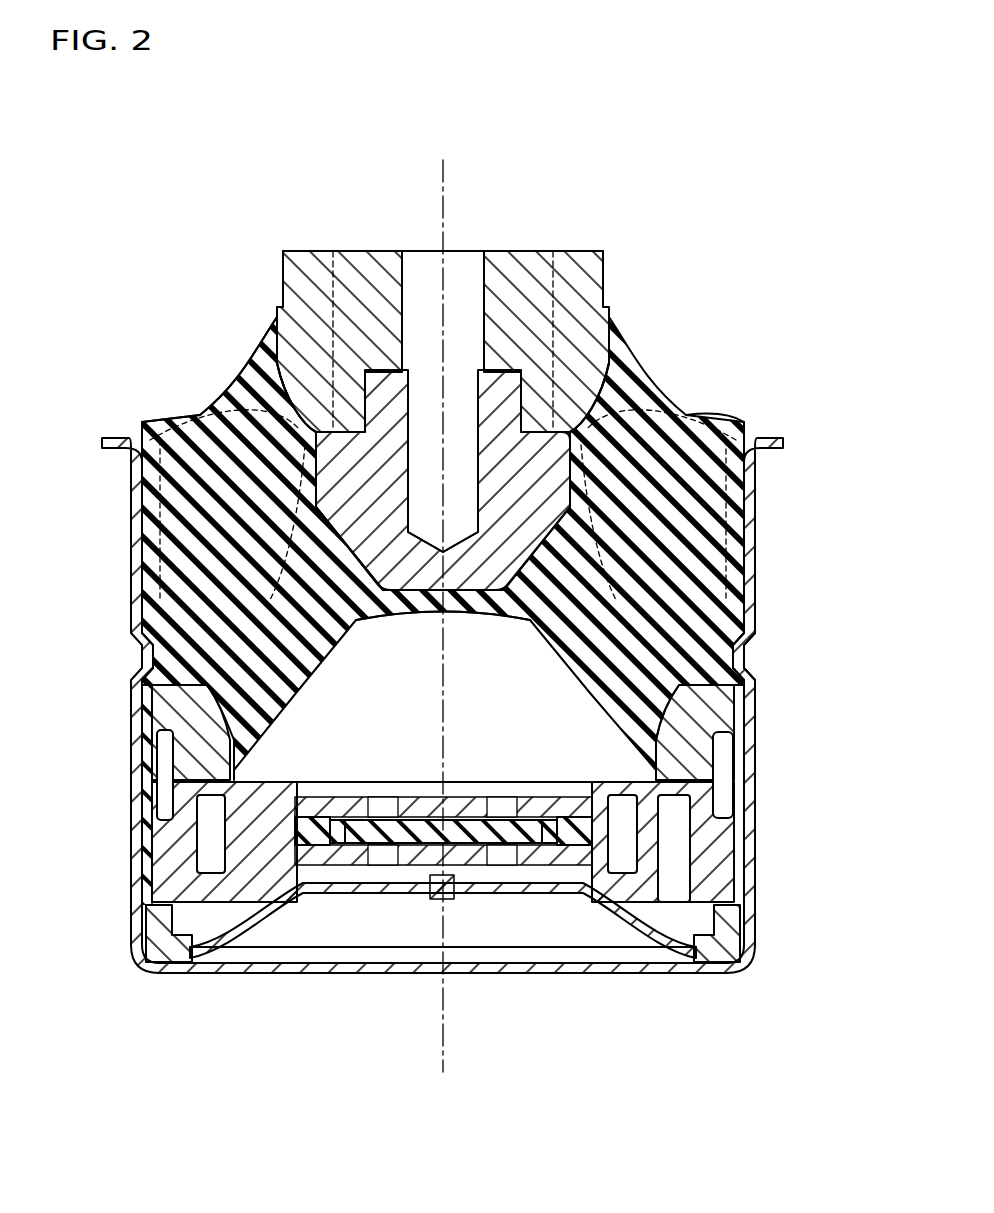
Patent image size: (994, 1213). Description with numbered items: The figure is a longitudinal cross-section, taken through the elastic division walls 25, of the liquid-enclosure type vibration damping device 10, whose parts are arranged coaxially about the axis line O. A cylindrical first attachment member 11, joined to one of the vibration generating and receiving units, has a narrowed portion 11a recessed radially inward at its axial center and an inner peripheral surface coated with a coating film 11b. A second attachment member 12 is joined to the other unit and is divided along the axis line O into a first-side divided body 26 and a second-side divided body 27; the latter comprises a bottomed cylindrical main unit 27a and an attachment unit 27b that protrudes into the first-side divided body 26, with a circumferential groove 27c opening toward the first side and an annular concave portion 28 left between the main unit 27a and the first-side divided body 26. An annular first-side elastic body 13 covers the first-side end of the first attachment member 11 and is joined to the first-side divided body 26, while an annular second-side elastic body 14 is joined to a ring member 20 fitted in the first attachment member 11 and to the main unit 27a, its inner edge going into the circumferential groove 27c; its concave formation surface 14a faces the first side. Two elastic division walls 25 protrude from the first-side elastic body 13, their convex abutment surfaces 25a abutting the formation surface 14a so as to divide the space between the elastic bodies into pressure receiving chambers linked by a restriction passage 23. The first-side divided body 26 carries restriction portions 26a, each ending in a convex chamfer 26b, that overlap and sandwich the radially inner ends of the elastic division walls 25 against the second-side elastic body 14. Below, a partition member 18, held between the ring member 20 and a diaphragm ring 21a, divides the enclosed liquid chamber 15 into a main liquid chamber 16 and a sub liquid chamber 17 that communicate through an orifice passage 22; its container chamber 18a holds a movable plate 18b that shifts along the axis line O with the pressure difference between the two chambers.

The vibration damping device 10 is at (738, 148).
The first attachment member 11 is at (746, 958).
The narrowed portion 11a is at (746, 660).
The coating film 11b is at (142, 873).
The second attachment member 12 is at (283, 192).
The first-side elastic body 13 is at (683, 420).
The second-side elastic body 14 is at (643, 660).
The formation surface 14a is at (260, 577).
The enclosed liquid chamber 15 is at (70, 760).
The main liquid chamber 16 is at (273, 752).
The sub liquid chamber 17 is at (220, 913).
The partition member 18 is at (746, 862).
The container chamber 18a is at (340, 845).
The movable plate 18b is at (413, 845).
The ring member 20 is at (717, 713).
The diaphragm ring 21a is at (713, 958).
The orifice passage 22 is at (622, 858).
The restriction passage 23 is at (723, 793).
The elastic division wall 25 is at (218, 510).
The abutment surface 25a is at (232, 640).
The first-side divided body 26 is at (300, 270).
The restriction portion 26a is at (302, 266).
The chamfer 26b is at (297, 413).
The second-side divided body 27 is at (245, 228).
The main unit 27a is at (215, 418).
The attachment unit 27b is at (288, 413).
The circumferential groove 27c is at (666, 412).
The annular concave portion 28 is at (550, 430).
The axis line O is at (443, 186).